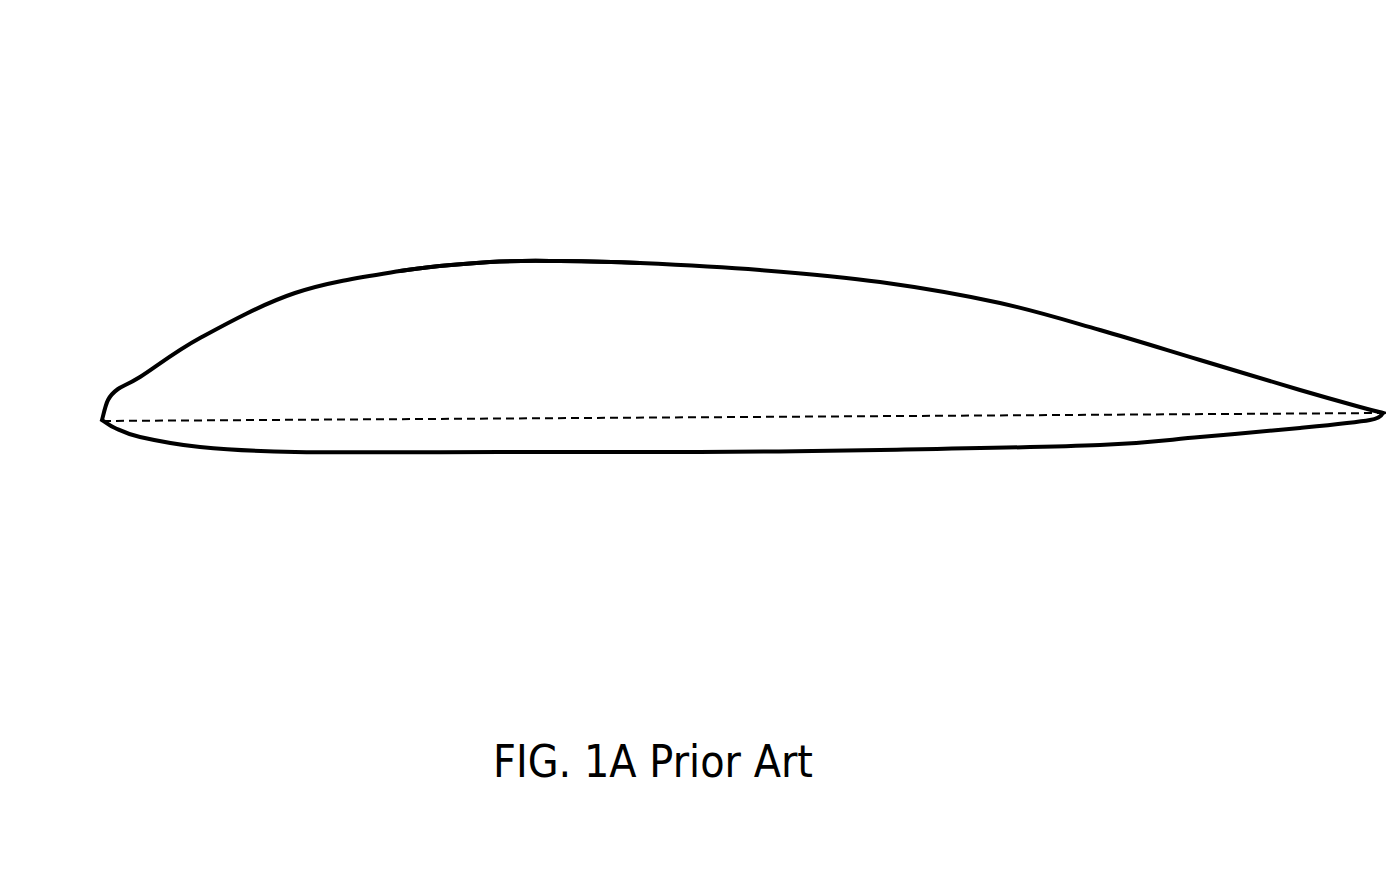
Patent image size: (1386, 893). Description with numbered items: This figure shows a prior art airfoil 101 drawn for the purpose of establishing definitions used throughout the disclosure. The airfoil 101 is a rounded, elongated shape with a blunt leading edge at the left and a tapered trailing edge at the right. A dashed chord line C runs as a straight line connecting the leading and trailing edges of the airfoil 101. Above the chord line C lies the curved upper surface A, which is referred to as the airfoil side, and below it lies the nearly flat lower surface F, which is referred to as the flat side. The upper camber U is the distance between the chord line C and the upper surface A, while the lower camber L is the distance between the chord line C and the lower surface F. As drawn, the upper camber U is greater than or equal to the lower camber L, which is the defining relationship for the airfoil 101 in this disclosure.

The airfoil 101 is at (893, 217).
The upper surface A is at (490, 260).
The lower surface F is at (597, 452).
The chord line C is at (675, 414).
The upper camber U is at (575, 406).
The lower camber L is at (400, 520).